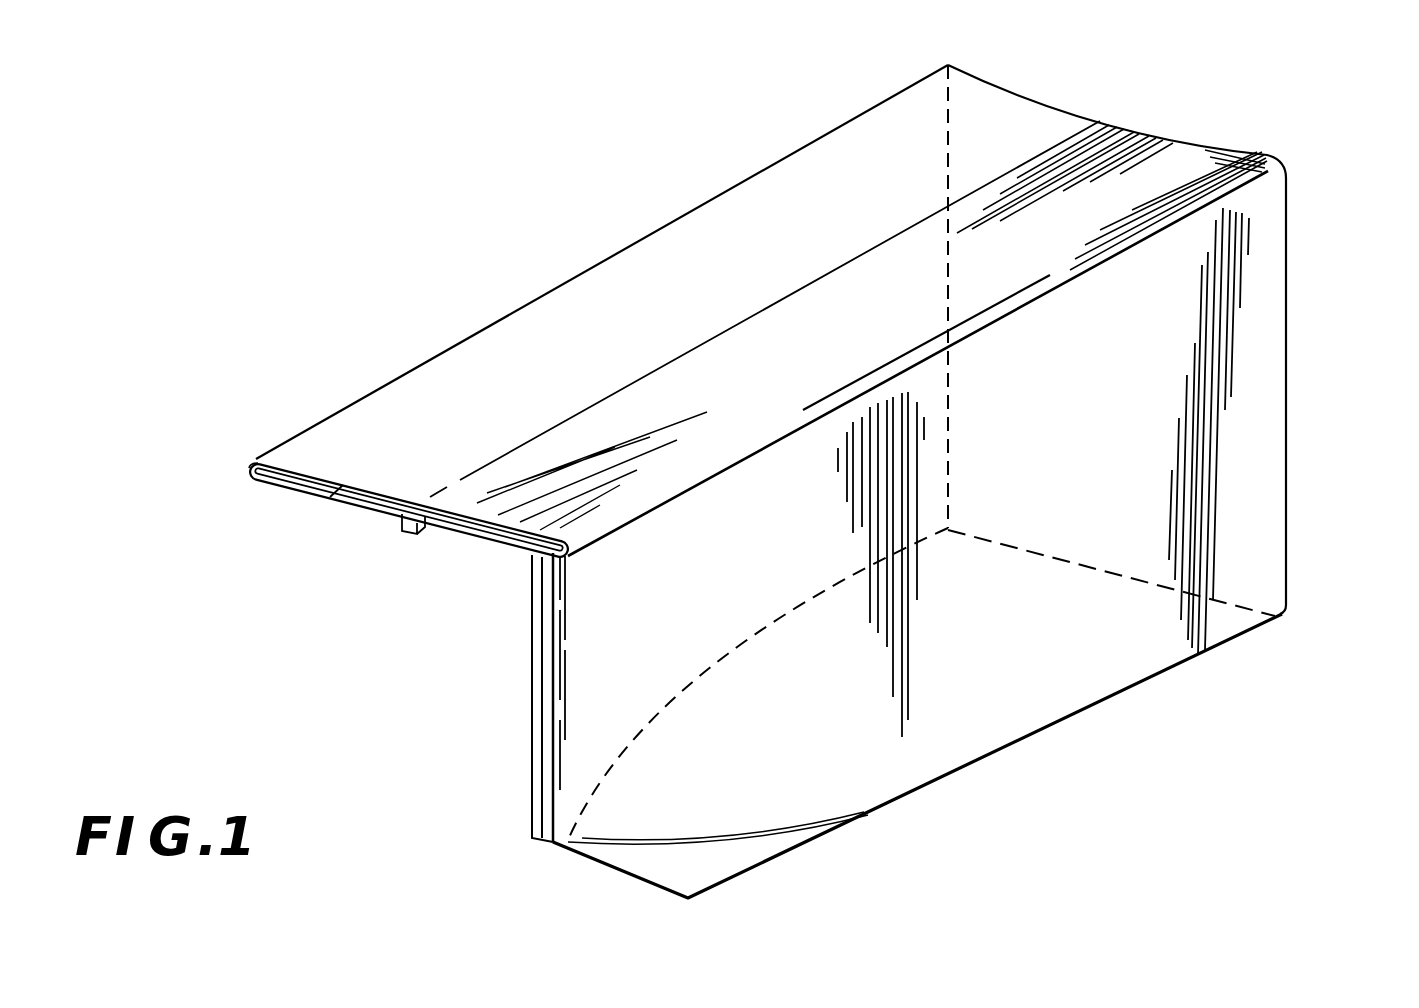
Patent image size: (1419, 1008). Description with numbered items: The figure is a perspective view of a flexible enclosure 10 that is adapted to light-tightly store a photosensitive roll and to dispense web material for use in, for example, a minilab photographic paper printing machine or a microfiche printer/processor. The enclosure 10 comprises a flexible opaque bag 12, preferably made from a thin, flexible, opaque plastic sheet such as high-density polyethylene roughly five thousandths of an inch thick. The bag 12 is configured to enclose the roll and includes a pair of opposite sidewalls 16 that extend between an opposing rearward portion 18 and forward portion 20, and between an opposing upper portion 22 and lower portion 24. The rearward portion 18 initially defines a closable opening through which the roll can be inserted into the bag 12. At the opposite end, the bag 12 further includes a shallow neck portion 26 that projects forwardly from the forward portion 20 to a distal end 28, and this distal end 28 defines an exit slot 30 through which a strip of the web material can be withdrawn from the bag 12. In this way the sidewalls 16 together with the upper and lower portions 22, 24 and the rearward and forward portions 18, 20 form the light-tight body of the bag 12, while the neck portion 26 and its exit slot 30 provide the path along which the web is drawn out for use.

The flexible enclosure 10 is at (513, 195).
The flexible opaque bag 12 is at (1290, 335).
The sidewalls 16 is at (1038, 672).
The rearward portion 18 is at (1258, 447).
The forward portion 20 is at (430, 360).
The upper portion 22 is at (800, 172).
The lower portion 24 is at (825, 806).
The neck portion 26 is at (357, 460).
The distal end 28 is at (263, 455).
The exit slot 30 is at (340, 488).